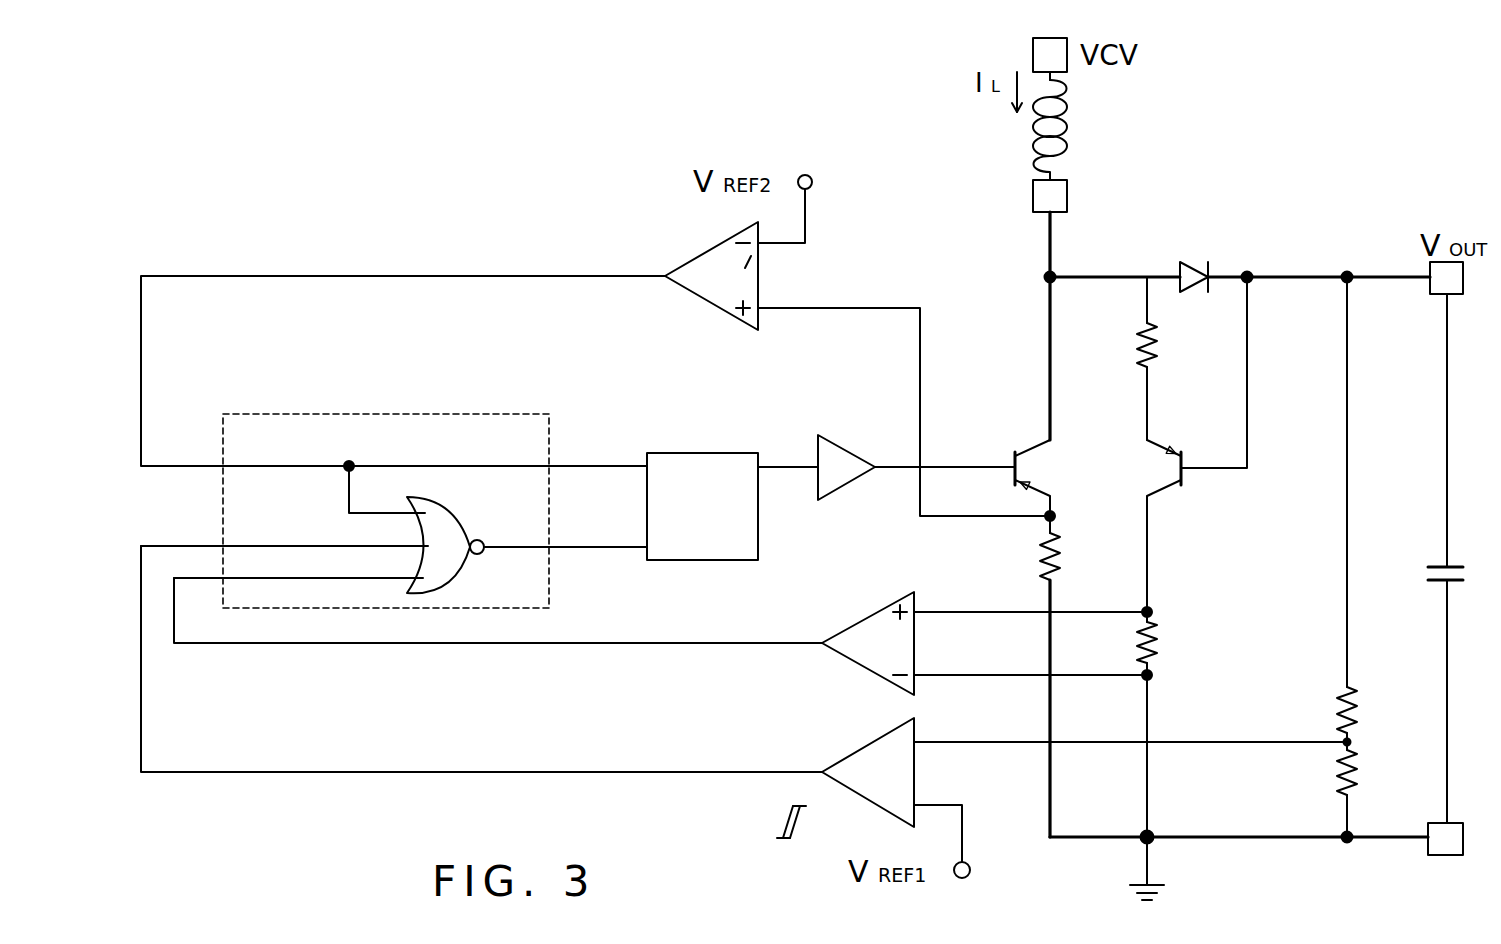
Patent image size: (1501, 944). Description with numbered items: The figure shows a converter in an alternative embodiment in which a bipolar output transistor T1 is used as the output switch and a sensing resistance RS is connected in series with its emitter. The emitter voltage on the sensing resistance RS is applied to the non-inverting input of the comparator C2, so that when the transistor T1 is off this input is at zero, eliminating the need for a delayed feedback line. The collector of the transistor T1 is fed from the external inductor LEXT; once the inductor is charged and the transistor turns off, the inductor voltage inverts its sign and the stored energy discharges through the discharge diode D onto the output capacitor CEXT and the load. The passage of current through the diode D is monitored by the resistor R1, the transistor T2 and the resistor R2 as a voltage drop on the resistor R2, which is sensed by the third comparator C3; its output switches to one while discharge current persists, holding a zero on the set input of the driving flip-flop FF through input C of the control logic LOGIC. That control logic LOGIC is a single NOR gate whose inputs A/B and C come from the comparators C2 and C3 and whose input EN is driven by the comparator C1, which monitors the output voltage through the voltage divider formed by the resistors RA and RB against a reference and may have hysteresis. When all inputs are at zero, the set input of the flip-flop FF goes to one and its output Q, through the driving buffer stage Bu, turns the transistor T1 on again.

The comparator C1 is at (744, 712).
The comparator C2 is at (711, 276).
The third comparator C3 is at (660, 636).
The driving flip-flop FF is at (732, 507).
The driving buffer stage Bu is at (916, 467).
The control logic circuit LOGIC is at (394, 511).
The bipolar output transistor T1 is at (1058, 396).
The transistor T2 is at (1197, 444).
The resistor R1 is at (1168, 358).
The resistor R2 is at (1168, 722).
The sensing resistance RS is at (1073, 552).
The voltage divider resistor RA is at (1369, 513).
The voltage divider resistor RB is at (1369, 793).
The discharge diode D is at (1202, 261).
The inductor LEXT is at (1091, 126).
The output capacitor CEXT is at (1408, 558).